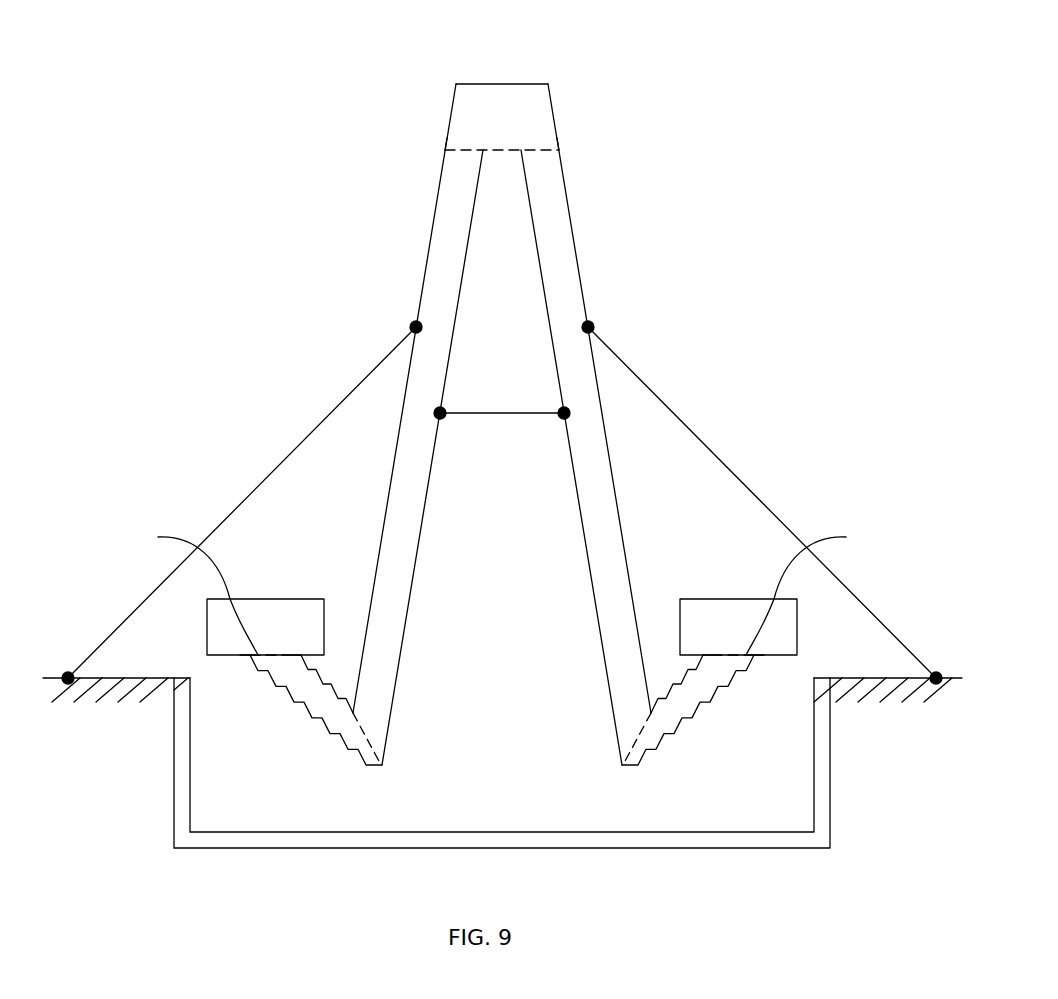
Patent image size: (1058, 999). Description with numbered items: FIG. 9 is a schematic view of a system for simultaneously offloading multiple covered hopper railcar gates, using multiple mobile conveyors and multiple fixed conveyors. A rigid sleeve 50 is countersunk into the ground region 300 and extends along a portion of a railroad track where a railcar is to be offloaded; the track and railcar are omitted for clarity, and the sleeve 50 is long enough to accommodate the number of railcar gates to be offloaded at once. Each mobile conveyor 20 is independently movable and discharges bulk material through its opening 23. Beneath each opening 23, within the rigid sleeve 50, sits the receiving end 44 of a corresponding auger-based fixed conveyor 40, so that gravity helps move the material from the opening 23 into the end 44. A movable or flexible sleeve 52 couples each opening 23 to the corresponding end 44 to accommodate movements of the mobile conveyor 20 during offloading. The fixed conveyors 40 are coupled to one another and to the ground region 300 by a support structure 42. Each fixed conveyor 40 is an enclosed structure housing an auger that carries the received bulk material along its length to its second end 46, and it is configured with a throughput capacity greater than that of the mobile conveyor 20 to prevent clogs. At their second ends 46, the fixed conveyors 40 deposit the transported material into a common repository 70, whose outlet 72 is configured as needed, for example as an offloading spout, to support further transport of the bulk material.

The mobile conveyor 20 is at (257, 598).
The opening 23 is at (502, 590).
The fixed conveyor 40 is at (385, 522).
The support structure 42 is at (243, 498).
The end 44 is at (363, 728).
The second end 46 is at (463, 148).
The rigid sleeve 50 is at (822, 768).
The flexible sleeve 52 is at (323, 727).
The common repository 70 is at (503, 98).
The outlet 72 is at (500, 152).
The ground region 300 is at (165, 678).